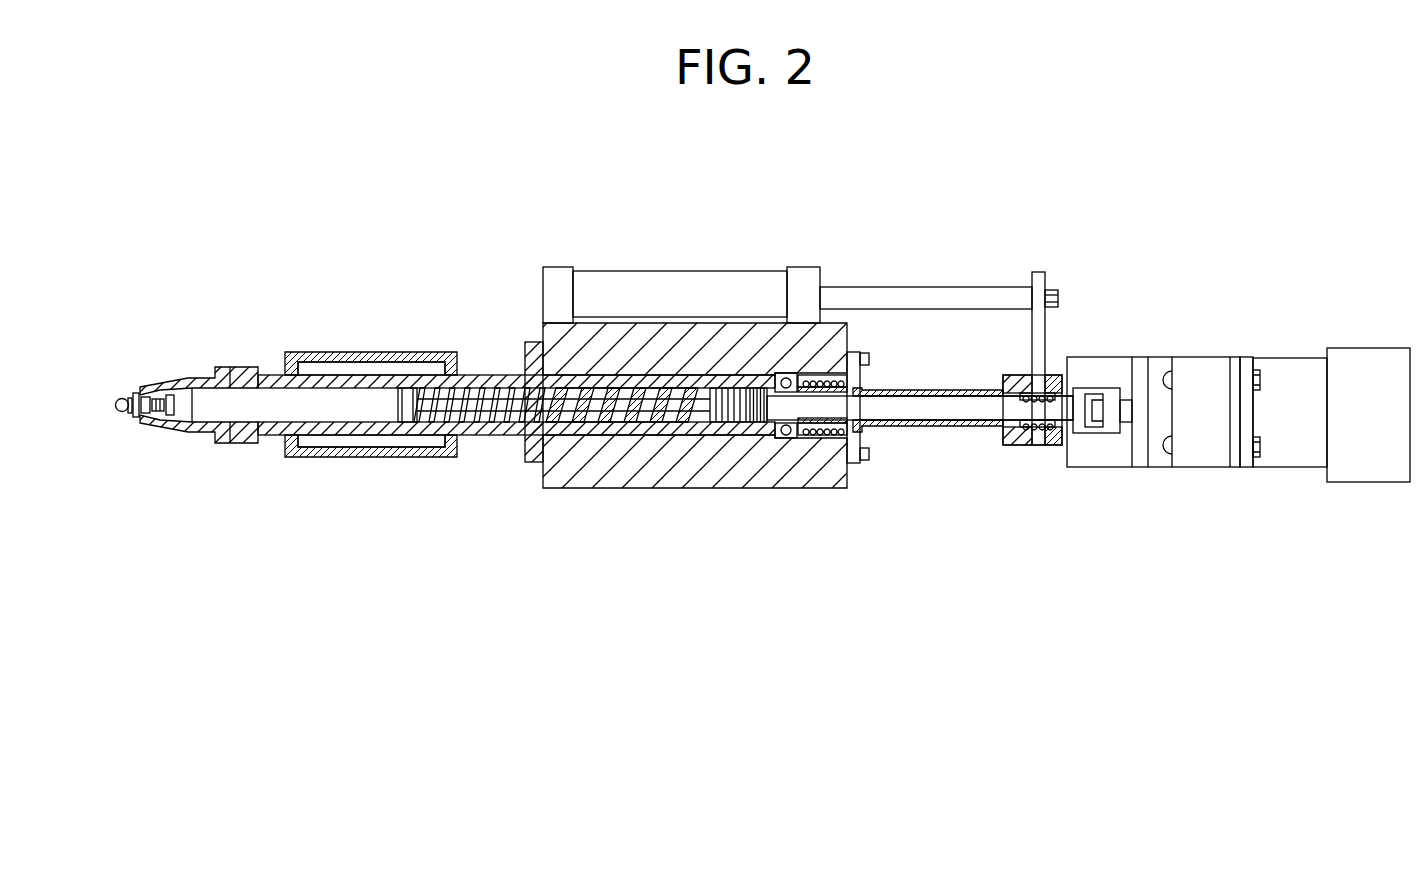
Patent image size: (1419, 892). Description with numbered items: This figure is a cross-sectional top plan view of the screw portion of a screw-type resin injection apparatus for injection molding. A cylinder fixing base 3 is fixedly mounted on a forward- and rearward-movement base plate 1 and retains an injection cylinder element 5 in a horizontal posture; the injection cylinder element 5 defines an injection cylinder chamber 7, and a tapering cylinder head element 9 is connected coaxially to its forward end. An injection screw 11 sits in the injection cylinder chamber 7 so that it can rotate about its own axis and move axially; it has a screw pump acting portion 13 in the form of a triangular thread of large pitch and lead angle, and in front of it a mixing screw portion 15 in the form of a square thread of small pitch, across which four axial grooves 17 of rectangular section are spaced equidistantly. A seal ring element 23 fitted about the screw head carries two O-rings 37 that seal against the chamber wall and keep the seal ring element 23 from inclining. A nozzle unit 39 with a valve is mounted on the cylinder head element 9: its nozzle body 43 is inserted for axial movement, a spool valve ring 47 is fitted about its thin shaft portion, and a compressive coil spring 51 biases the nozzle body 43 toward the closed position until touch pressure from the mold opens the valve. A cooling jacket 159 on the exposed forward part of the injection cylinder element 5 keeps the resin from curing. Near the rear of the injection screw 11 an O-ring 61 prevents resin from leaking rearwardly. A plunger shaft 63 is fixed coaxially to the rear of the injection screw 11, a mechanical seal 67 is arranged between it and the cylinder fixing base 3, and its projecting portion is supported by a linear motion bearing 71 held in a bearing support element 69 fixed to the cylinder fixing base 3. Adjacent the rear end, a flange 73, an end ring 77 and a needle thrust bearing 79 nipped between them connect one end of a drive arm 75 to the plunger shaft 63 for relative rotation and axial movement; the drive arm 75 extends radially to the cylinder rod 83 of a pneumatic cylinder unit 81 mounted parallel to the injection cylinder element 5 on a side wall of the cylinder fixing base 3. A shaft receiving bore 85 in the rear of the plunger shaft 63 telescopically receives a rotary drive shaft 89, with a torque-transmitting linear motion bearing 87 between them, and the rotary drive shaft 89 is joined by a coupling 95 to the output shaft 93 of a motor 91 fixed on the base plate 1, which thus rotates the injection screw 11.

The forward- and rearward-movement base plate 1 is at (1118, 450).
The cylinder fixing base 3 is at (700, 475).
The injection cylinder element 5 is at (526, 373).
The injection cylinder chamber 7 is at (344, 437).
The cylinder head element 9 is at (204, 433).
The injection screw 11 is at (588, 410).
The screw pump acting portion 13 is at (645, 397).
The mixing screw portion 15 is at (478, 437).
The axial grooves 17 is at (478, 375).
The seal ring element 23 is at (418, 357).
The O-rings 37 is at (424, 437).
The nozzle unit 39 is at (133, 421).
The nozzle body 43 is at (116, 412).
The spool valve ring 47 is at (158, 392).
The compressive coil spring 51 is at (133, 392).
The O-ring 61 is at (722, 388).
The plunger shaft 63 is at (820, 413).
The mechanical seal 67 is at (778, 440).
The bearing support element 69 is at (850, 385).
The linear motion bearing 71 is at (850, 352).
The flange 73 is at (1015, 375).
The drive arm 75 is at (1045, 280).
The end ring 77 is at (1074, 388).
The needle thrust bearing 79 is at (1044, 383).
The pneumatic cylinder unit 81 is at (748, 290).
The cylinder rod 83 is at (940, 293).
The shaft receiving bore 85 is at (933, 416).
The linear motion bearing 87 is at (1017, 435).
The rotary drive shaft 89 is at (976, 426).
The motor 91 is at (1200, 457).
The output shaft 93 is at (1128, 402).
The coupling 95 is at (1082, 433).
The cooling jacket 159 is at (382, 352).